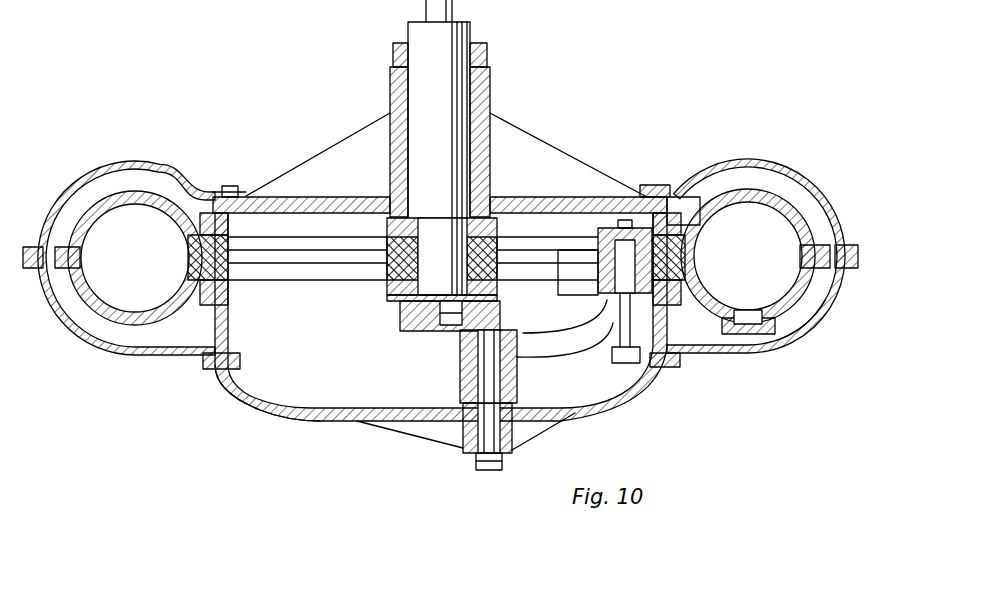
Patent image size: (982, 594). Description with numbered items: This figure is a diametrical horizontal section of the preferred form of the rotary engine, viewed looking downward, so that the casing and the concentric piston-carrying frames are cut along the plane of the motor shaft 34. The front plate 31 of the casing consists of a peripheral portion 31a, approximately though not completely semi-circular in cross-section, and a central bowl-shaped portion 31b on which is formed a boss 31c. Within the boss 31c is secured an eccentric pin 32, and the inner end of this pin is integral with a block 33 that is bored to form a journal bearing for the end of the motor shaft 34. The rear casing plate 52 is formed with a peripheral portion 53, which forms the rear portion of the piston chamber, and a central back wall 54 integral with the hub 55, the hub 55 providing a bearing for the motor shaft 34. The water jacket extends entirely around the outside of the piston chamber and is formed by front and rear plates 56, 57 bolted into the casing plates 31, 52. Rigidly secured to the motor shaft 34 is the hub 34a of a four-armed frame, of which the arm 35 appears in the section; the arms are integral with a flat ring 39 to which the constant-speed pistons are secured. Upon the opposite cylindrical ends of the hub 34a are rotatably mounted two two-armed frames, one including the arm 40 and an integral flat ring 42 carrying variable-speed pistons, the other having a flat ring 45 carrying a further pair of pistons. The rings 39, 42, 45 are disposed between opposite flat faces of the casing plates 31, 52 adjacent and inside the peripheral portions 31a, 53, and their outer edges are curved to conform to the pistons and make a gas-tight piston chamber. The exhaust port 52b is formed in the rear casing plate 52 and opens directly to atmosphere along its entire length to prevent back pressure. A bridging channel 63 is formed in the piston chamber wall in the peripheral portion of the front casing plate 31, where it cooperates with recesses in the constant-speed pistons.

The front plate 31 is at (628, 393).
The peripheral portion 31a is at (784, 320).
The central bowl-shaped portion 31b is at (253, 400).
The boss 31c is at (478, 452).
The eccentric pin 32 is at (517, 384).
The block 33 is at (404, 318).
The motor shaft 34 is at (458, 44).
The hub 34a is at (442, 256).
The arm 35 is at (301, 263).
The flat ring 39 is at (247, 194).
The arm 40 is at (312, 245).
The flat ring 42 is at (190, 250).
The flat ring 45 is at (190, 268).
The rear casing plate 52 is at (530, 182).
The exhaust port 52b is at (798, 192).
The peripheral portion 53 is at (758, 196).
The central back wall 54 is at (592, 196).
The hub 55 is at (490, 96).
The front plate 56 is at (822, 310).
The rear plate 57 is at (832, 214).
The bridging channel 63 is at (745, 332).